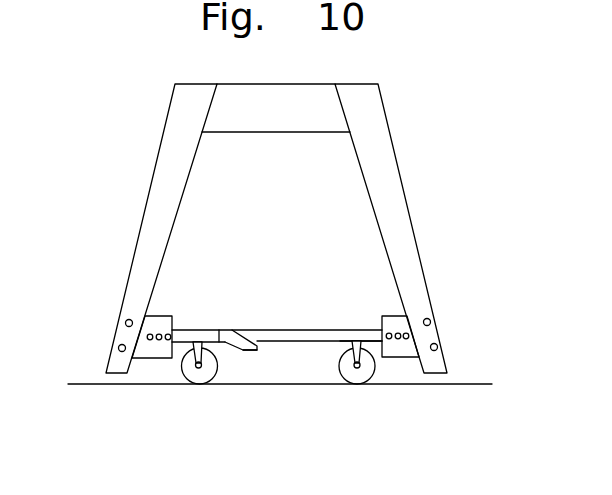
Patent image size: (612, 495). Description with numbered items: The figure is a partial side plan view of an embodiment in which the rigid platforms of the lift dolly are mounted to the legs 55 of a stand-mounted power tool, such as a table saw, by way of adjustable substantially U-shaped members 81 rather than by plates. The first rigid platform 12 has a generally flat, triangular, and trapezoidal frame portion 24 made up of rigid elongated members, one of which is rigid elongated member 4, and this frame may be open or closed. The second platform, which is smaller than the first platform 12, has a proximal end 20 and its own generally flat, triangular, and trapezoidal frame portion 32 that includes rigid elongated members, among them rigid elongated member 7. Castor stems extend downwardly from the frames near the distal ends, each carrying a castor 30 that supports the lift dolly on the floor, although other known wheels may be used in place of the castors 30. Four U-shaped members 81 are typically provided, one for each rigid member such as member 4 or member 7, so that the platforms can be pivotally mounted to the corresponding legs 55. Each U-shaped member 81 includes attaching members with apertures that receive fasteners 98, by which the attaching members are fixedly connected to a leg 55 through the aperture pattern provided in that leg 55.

The leg 55 is at (183, 120).
The fastener 98 is at (125, 323).
The U-shaped member 81 is at (148, 352).
The frame portion 24 is at (303, 342).
The frame portion 32 is at (196, 338).
The rigid elongated member 7 is at (220, 330).
The proximal end 20 is at (240, 351).
The rigid elongated member 4 is at (350, 337).
The castor 30 is at (199, 376).
The first rigid platform 12 is at (286, 310).